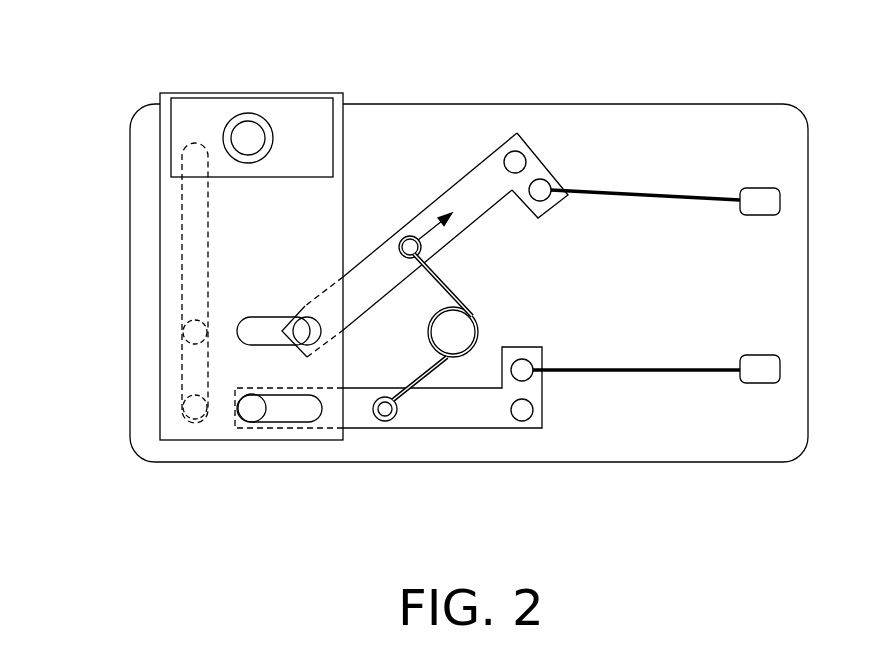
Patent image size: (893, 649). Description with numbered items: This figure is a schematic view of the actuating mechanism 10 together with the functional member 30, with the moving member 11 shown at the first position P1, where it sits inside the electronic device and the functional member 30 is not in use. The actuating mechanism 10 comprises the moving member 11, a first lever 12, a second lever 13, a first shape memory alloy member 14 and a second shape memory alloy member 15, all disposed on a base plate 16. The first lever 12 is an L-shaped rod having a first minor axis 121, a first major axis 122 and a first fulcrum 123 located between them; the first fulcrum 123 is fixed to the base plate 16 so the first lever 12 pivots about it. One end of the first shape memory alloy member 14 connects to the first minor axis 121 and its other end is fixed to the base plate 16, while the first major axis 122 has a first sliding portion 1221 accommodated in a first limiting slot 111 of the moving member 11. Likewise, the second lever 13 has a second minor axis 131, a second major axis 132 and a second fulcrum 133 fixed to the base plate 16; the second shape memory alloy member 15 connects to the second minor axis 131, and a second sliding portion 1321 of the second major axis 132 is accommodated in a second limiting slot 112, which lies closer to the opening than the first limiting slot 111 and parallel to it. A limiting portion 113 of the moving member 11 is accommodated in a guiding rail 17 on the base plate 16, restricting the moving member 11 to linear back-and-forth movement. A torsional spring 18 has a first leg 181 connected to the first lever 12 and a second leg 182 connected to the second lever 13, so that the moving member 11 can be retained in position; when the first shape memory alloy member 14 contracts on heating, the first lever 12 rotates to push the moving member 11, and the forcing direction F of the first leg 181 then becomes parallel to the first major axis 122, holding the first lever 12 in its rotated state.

The actuating mechanism 10 is at (128, 38).
The first position P1 is at (340, 33).
The functional member 30 is at (208, 108).
The second lever 13 is at (440, 192).
The second major axis 132 is at (475, 172).
The second fulcrum 133 is at (516, 158).
The second minor axis 131 is at (542, 176).
The second shape memory alloy member 15 is at (660, 195).
The base plate 16 is at (138, 155).
The moving member 11 is at (167, 237).
The guiding rail 17 is at (181, 270).
The limiting portion 113 is at (185, 332).
The second limiting slot 112 is at (253, 317).
The second sliding portion 1321 is at (305, 325).
The second leg 182 is at (437, 286).
The forcing direction F is at (380, 270).
The torsional spring 18 is at (461, 376).
The first shape memory alloy member 14 is at (657, 370).
The first sliding portion 1221 is at (253, 414).
The first limiting slot 111 is at (285, 420).
The first leg 181 is at (428, 373).
The first major axis 122 is at (465, 408).
The first fulcrum 123 is at (522, 412).
The first minor axis 121 is at (535, 382).
The first lever 12 is at (413, 451).